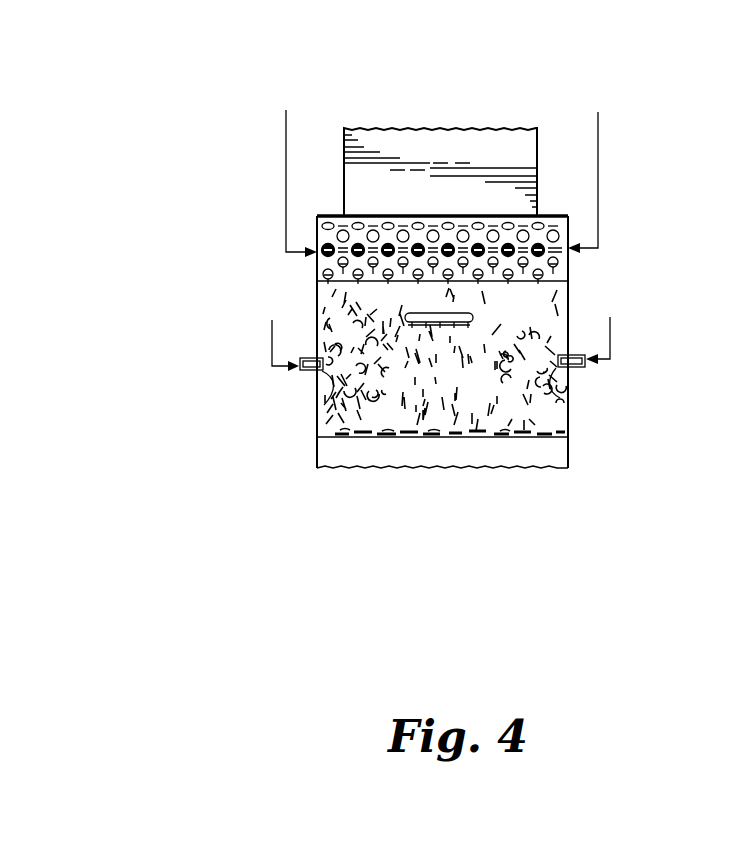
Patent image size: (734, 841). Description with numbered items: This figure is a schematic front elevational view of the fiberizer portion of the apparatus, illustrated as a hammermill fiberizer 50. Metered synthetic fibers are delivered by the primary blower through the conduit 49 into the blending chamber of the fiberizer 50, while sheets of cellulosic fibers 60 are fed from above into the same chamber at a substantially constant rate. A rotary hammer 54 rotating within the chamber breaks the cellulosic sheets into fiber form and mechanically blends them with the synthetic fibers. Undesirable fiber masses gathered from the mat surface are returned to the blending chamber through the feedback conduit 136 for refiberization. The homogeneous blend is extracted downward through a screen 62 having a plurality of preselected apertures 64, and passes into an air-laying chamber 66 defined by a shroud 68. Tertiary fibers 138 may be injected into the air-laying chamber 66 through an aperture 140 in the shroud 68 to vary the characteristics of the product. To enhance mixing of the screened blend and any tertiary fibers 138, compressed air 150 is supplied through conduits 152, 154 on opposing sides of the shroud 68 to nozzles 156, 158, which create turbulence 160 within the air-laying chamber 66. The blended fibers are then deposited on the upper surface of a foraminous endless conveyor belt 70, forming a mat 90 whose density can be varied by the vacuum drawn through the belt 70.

The conduit 49 is at (286, 126).
The fiberizer 50 is at (466, 219).
The rotary hammer 54 is at (343, 257).
The sheets of cellulosic fibers 60 is at (436, 152).
The screen 62 is at (563, 254).
The apertures 64 is at (553, 264).
The air-laying chamber 66 is at (557, 326).
The shroud 68 is at (314, 310).
The foraminous endless conveyor belt 70 is at (482, 434).
The mat 90 is at (503, 420).
The conduit 136 is at (598, 126).
The tertiary fibers 138 is at (479, 342).
The aperture 140 is at (440, 313).
The compressed air 150 is at (270, 333).
The conduit 152 is at (305, 373).
The conduit 154 is at (575, 368).
The nozzle 156 is at (324, 405).
The nozzle 158 is at (560, 398).
The turbulence 160 is at (512, 371).